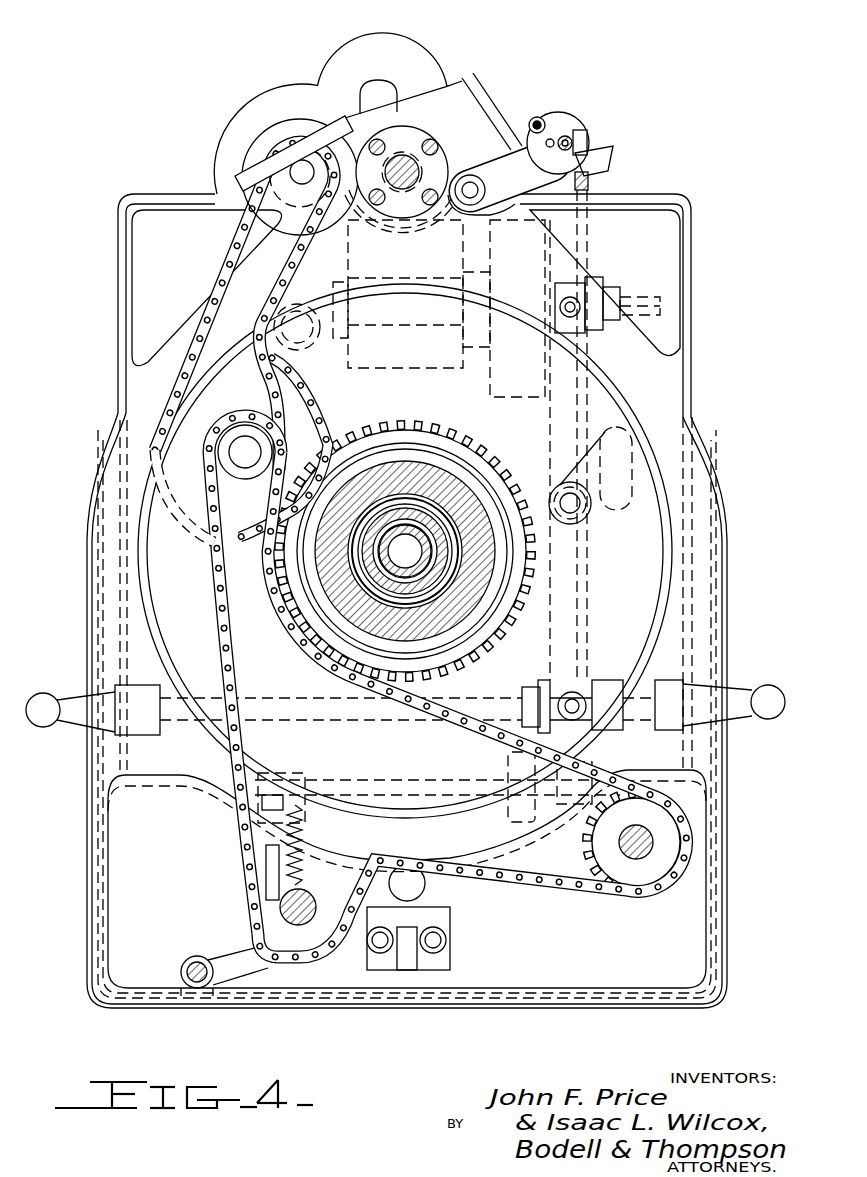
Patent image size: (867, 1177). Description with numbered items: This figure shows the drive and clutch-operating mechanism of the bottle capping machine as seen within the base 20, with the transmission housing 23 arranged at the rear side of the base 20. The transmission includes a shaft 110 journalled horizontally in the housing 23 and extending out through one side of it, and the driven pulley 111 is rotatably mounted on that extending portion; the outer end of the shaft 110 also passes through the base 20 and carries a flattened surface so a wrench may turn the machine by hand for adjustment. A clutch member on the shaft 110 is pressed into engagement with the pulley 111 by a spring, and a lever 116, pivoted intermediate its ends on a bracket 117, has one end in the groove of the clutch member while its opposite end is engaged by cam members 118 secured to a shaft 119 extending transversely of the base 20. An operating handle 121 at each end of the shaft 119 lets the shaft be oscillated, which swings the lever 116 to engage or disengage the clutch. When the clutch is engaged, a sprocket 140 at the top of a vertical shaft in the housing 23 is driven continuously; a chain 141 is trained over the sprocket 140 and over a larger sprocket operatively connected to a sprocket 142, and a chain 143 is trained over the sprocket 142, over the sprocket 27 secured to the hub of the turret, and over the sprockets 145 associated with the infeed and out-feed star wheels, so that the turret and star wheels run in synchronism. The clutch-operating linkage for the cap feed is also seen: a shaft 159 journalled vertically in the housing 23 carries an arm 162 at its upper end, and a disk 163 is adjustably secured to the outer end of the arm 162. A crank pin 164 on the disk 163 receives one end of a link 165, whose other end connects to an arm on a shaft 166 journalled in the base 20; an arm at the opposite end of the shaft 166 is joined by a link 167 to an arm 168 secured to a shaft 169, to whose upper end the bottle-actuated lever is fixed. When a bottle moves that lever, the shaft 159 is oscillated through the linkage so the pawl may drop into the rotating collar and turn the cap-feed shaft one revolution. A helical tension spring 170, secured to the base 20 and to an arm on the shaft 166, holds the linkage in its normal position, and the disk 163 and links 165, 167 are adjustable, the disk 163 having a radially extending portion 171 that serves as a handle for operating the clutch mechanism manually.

The base 20 is at (98, 582).
The transmission housing 23 is at (433, 85).
The sprocket 27 is at (396, 428).
The shaft 110 is at (624, 296).
The driven pulley 111 is at (492, 376).
The lever 116 is at (548, 420).
The bracket 117 is at (592, 510).
The cam members 118 is at (532, 686).
The shaft 119 is at (326, 712).
The operating handle 121 is at (44, 728).
The sprocket 140 is at (318, 197).
The chain 141 is at (285, 282).
The sprocket 142 is at (246, 494).
The chain 143 is at (228, 641).
The sprockets 145 is at (592, 850).
The shaft 159 is at (470, 175).
The arm 162 is at (497, 165).
The disk 163 is at (565, 122).
The crank pin 164 is at (590, 133).
The link 165 is at (589, 184).
The shaft 166 is at (420, 782).
The link 167 is at (258, 852).
The arm 168 is at (256, 954).
The shaft 169 is at (190, 968).
The helical tension spring 170 is at (293, 829).
The radially extending portion 171 is at (614, 158).